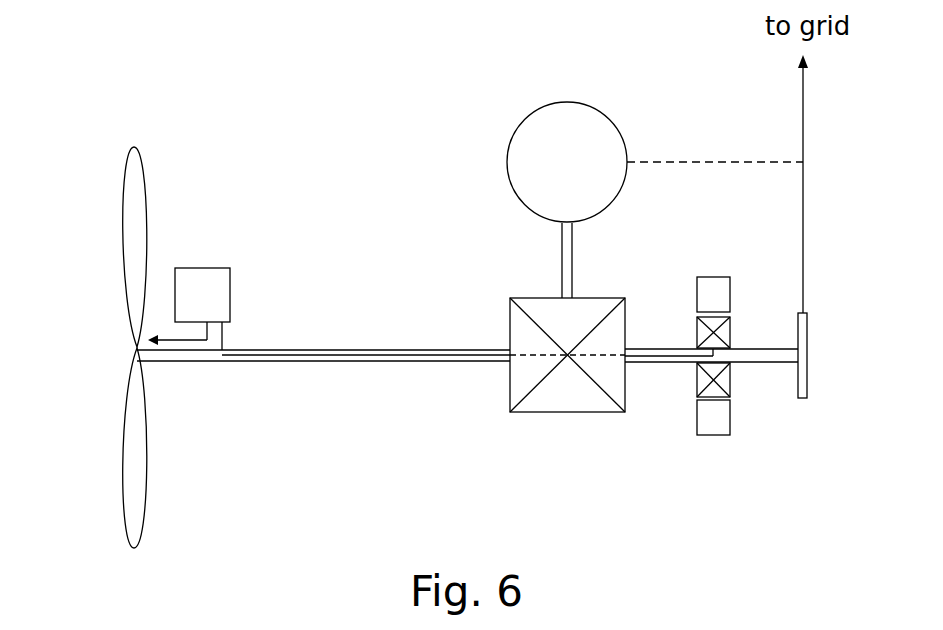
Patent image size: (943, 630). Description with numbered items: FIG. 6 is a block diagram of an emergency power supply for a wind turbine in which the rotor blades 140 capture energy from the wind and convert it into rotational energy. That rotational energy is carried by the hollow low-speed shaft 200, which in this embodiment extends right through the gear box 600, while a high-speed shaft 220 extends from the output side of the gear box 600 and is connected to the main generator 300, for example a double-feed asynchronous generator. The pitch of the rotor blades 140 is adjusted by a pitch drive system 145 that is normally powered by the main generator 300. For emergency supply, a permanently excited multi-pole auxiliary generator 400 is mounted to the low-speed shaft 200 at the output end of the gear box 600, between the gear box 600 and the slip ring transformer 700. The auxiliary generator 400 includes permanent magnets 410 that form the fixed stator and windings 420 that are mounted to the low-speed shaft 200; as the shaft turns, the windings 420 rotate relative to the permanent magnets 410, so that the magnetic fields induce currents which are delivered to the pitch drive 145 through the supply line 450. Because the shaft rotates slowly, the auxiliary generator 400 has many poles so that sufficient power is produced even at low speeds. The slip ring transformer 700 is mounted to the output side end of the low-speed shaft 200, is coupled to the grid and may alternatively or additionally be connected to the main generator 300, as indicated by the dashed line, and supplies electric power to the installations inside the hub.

The rotor blades 140 is at (124, 177).
The pitch drive system 145 is at (203, 264).
The low-speed shaft 200 is at (383, 365).
The high-speed shaft 220 is at (561, 257).
The main generator 300 is at (617, 128).
The auxiliary generator 400 is at (755, 373).
The permanent magnets 410 is at (708, 277).
The windings 420 is at (730, 382).
The supply line 450 is at (313, 352).
The gear box 600 is at (523, 417).
The slip ring transformer 700 is at (808, 338).